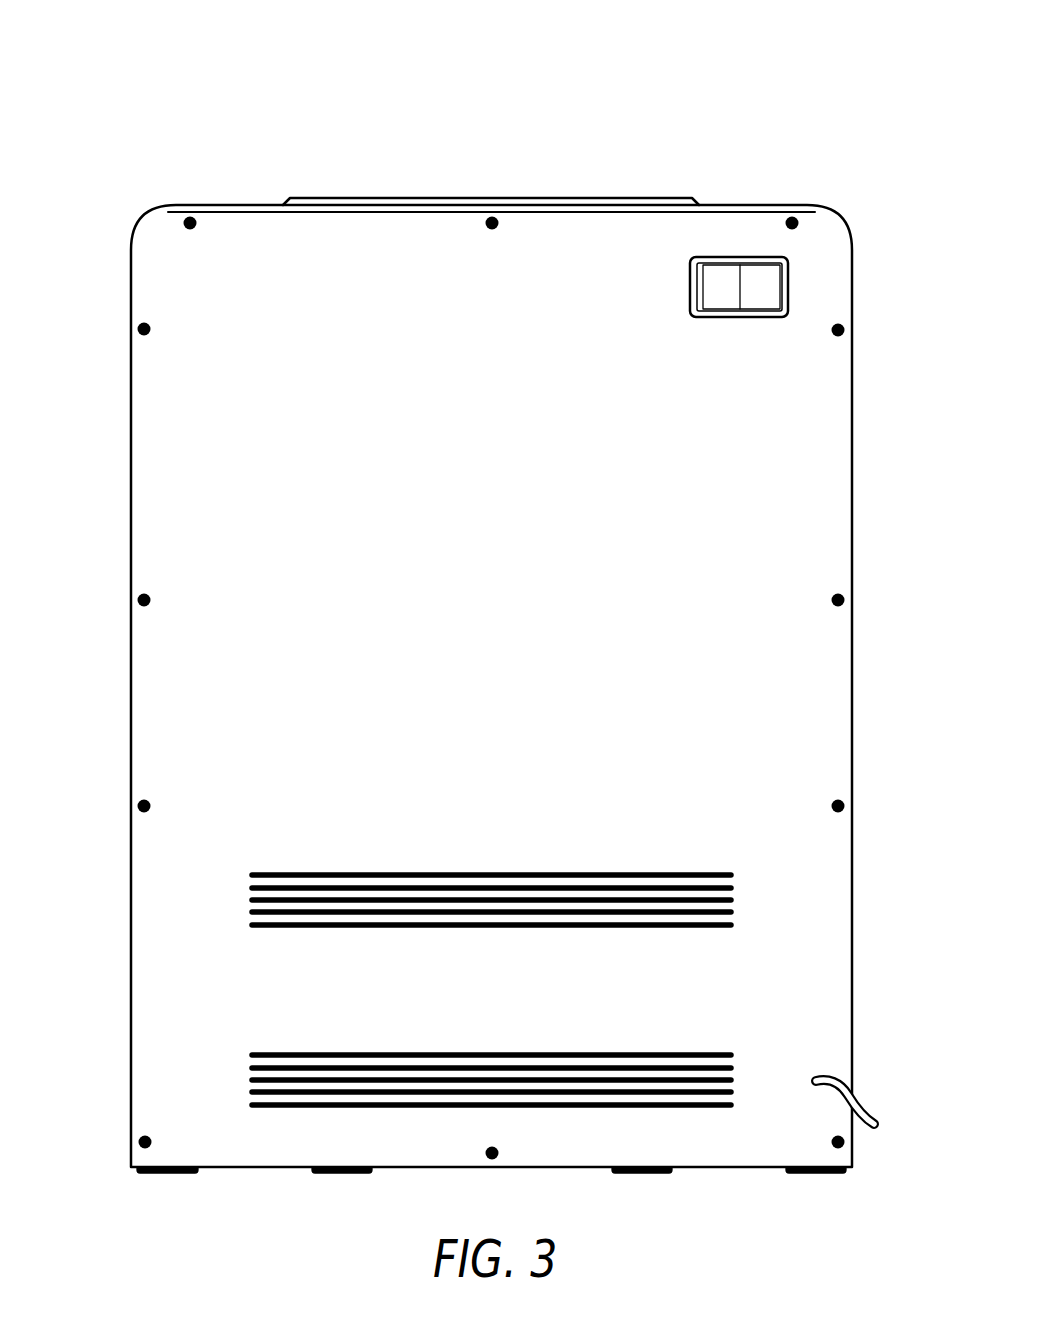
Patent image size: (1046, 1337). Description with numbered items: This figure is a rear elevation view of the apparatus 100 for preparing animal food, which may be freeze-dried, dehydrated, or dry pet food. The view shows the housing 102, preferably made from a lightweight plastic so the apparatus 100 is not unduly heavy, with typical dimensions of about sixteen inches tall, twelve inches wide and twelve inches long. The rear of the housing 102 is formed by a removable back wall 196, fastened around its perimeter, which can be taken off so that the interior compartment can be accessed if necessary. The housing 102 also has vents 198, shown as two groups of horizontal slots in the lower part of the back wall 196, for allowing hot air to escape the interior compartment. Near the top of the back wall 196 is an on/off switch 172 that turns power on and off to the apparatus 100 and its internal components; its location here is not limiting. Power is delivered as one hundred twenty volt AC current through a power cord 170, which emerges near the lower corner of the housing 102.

The apparatus 100 is at (501, 596).
The housing 102 is at (501, 655).
The removable back wall 196 is at (533, 685).
The on/off switch 172 is at (749, 227).
The vent 198 is at (491, 937).
The power cord 170 is at (888, 1100).